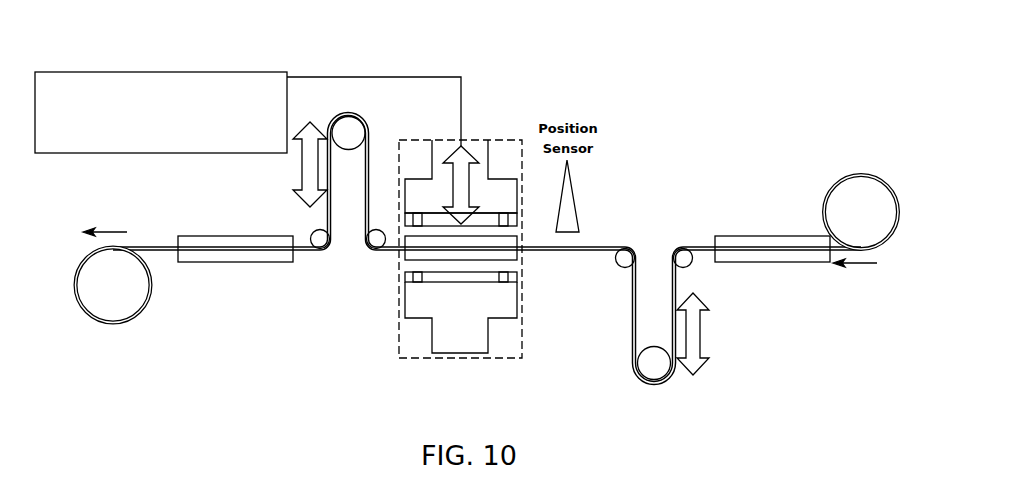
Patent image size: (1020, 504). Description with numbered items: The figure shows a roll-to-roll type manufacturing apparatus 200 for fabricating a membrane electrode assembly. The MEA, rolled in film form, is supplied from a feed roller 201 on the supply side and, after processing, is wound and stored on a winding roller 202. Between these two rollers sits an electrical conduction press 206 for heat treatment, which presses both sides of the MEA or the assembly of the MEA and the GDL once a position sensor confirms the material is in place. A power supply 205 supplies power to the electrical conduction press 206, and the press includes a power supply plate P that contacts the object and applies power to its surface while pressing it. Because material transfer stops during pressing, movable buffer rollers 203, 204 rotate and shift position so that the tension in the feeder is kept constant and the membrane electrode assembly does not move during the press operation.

The MEA manufacturing apparatus with electrical conduction press 200 is at (634, 100).
The feed roller 201 is at (845, 179).
The winding roller 202 is at (151, 286).
The buffer roller 203 is at (656, 368).
The buffer roller 204 is at (350, 131).
The power supply 205 is at (235, 72).
The electrical conduction press 206 is at (483, 140).
The power supply plate for press P is at (509, 220).